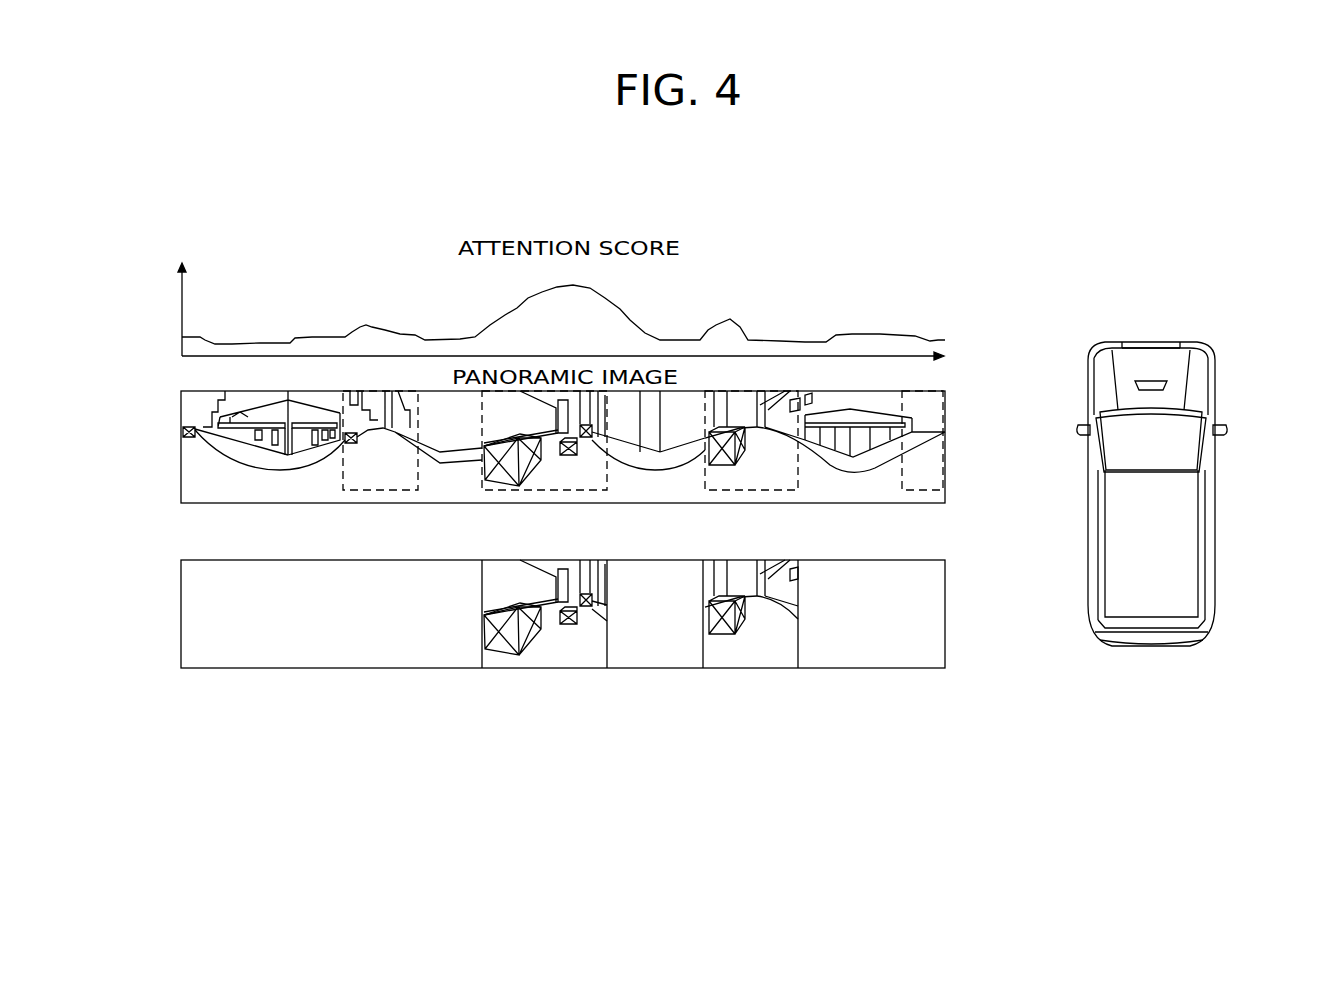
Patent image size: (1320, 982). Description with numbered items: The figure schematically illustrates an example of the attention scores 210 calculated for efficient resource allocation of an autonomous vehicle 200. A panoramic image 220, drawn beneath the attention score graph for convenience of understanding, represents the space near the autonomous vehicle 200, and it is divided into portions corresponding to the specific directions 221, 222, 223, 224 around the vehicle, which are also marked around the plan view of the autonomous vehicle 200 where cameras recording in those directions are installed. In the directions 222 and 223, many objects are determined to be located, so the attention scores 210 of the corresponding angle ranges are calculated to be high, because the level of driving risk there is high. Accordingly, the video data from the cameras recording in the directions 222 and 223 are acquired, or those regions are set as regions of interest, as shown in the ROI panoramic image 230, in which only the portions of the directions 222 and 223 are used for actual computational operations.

The autonomous vehicle 200 is at (1215, 375).
The attention scores 210 is at (181, 298).
The panoramic image 220 is at (181, 432).
The direction 221 is at (380, 490).
The direction 222 is at (569, 490).
The direction 223 is at (752, 490).
The direction 224 is at (922, 490).
The ROI panoramic image 230 is at (181, 597).